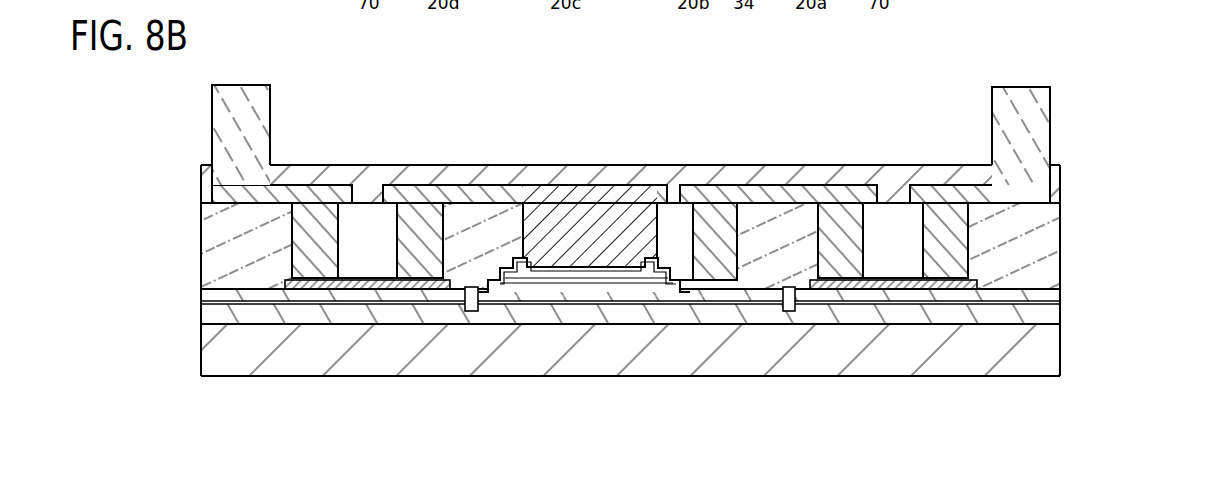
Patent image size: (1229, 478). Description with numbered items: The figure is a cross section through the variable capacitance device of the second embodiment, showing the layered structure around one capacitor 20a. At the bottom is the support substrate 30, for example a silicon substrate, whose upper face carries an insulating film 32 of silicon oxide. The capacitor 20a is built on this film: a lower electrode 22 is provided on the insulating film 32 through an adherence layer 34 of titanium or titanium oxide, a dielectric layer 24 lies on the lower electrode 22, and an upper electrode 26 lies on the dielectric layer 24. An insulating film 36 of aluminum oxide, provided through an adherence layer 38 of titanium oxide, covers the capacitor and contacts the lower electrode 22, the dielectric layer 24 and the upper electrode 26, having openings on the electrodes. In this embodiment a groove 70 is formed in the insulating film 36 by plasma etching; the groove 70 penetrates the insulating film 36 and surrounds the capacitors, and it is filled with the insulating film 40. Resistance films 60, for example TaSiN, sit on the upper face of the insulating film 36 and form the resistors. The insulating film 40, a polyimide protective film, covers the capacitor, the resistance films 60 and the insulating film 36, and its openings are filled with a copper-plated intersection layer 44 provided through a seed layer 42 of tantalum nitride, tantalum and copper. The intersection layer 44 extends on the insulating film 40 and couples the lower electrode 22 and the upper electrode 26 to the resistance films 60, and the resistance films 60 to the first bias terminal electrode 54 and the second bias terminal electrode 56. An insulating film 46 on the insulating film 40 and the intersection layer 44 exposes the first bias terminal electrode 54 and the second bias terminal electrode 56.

The support substrate 30 is at (1060, 364).
The insulating film 32 is at (1052, 313).
The adherence layer 34 is at (735, 302).
The insulating film 36 is at (1058, 292).
The adherence layer 38 is at (1058, 303).
The insulating film 40 is at (1048, 247).
The seed layer 42 is at (1056, 203).
The intersection layer 44 is at (1050, 190).
The insulating film 46 is at (1058, 172).
The first bias terminal electrode 54 is at (1047, 98).
The second bias terminal electrode 56 is at (272, 98).
The resistance film 60 is at (378, 284).
The groove 70 is at (475, 305).
The capacitor 20a is at (592, 289).
The lower electrode 22 is at (555, 293).
The dielectric layer 24 is at (618, 287).
The upper electrode 26 is at (650, 285).